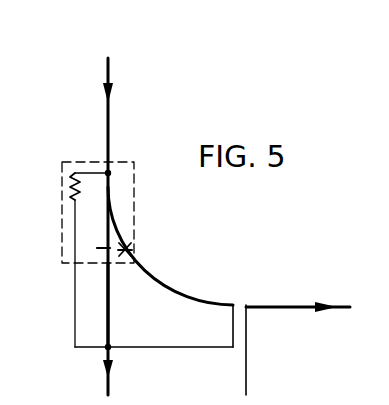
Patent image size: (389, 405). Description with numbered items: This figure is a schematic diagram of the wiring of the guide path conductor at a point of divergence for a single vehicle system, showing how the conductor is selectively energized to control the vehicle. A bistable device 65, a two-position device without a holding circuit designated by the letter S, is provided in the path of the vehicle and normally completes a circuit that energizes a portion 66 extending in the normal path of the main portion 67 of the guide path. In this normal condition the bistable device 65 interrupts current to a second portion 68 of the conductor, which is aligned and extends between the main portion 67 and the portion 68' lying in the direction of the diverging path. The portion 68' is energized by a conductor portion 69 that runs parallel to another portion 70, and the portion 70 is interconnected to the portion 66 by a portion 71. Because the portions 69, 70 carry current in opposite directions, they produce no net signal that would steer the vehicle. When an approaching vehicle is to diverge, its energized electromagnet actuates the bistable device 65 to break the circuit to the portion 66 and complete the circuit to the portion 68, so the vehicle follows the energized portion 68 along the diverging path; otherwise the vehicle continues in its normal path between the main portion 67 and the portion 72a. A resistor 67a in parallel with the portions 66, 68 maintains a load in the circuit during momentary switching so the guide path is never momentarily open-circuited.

The bistable device 65 is at (88, 173).
The portion 66 is at (105, 297).
The main portion 67 is at (112, 114).
The resistor 67a is at (70, 193).
The second portion 68 is at (170, 246).
The portion 68' is at (298, 290).
The conductor portion 69 is at (248, 330).
The portion 70 is at (232, 330).
The portion 71 is at (167, 325).
The portion 72a is at (104, 386).
The bistable device designation S is at (130, 195).